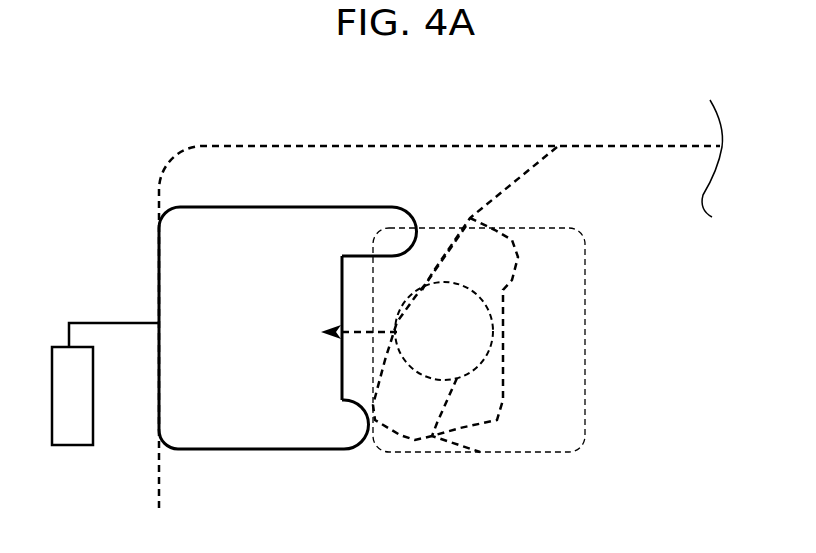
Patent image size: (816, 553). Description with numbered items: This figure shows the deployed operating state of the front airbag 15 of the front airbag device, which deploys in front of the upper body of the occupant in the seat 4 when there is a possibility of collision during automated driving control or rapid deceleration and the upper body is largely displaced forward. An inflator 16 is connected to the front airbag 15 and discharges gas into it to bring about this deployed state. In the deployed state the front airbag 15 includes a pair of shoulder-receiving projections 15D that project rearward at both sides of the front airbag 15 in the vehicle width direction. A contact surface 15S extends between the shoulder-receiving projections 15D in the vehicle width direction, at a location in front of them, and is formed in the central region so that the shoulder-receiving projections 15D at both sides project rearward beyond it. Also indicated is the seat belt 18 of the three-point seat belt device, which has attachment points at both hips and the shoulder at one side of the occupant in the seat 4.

The seat 4 is at (570, 347).
The front airbag 15 is at (202, 437).
The shoulder-receiving projections 15D is at (364, 220).
The contact surface 15S is at (349, 302).
The inflator 16 is at (72, 425).
The seat belt 18 is at (505, 183).